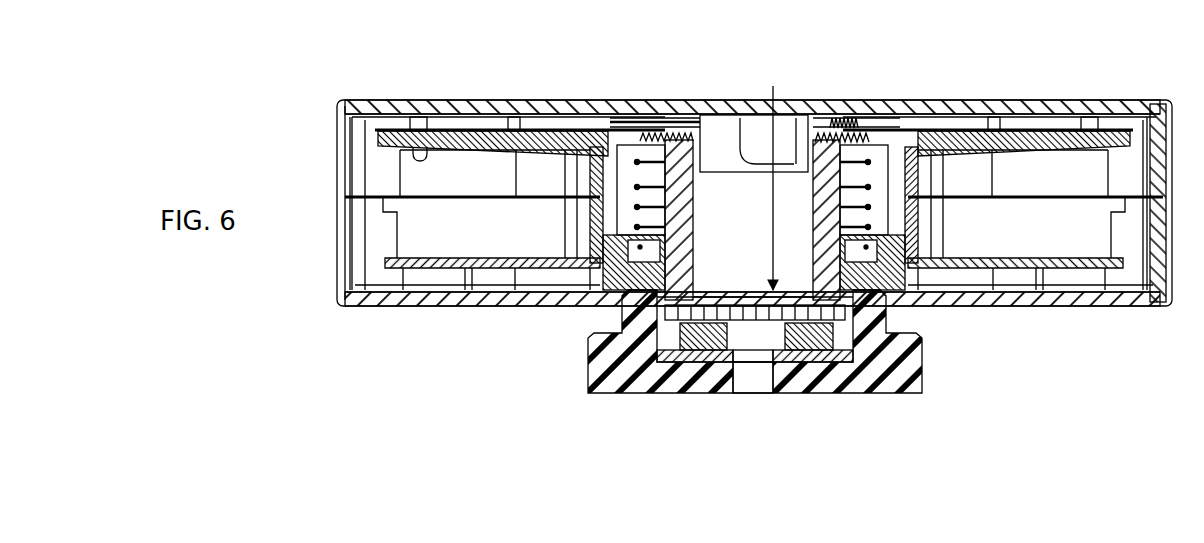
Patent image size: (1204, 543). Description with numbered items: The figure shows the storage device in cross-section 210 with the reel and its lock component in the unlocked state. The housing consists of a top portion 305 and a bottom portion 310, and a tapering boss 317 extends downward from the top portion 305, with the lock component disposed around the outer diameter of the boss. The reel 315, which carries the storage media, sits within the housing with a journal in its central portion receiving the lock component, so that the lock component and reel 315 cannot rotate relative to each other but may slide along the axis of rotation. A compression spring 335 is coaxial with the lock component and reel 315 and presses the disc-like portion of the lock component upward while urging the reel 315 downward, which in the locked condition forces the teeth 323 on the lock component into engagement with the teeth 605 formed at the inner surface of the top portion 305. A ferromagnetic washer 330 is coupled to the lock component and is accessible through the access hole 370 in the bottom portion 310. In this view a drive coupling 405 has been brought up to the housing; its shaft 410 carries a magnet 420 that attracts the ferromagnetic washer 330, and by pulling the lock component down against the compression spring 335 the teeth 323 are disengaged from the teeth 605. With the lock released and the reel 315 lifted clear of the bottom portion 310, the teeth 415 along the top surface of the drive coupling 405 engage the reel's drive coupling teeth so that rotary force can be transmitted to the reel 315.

The cross-section 210 is at (985, 62).
The top portion 305 is at (568, 108).
The bottom portion 310 is at (404, 307).
The reel 315 is at (487, 129).
The tapering boss 317 is at (741, 110).
The teeth 323 is at (831, 110).
The ferromagnetic washer 330 is at (777, 177).
The compression spring 335 is at (906, 129).
The access hole 370 is at (617, 311).
The drive coupling 405 is at (607, 392).
The shaft 410 is at (764, 386).
The teeth 415 is at (902, 312).
The magnet 420 is at (670, 345).
The teeth 605 is at (861, 108).